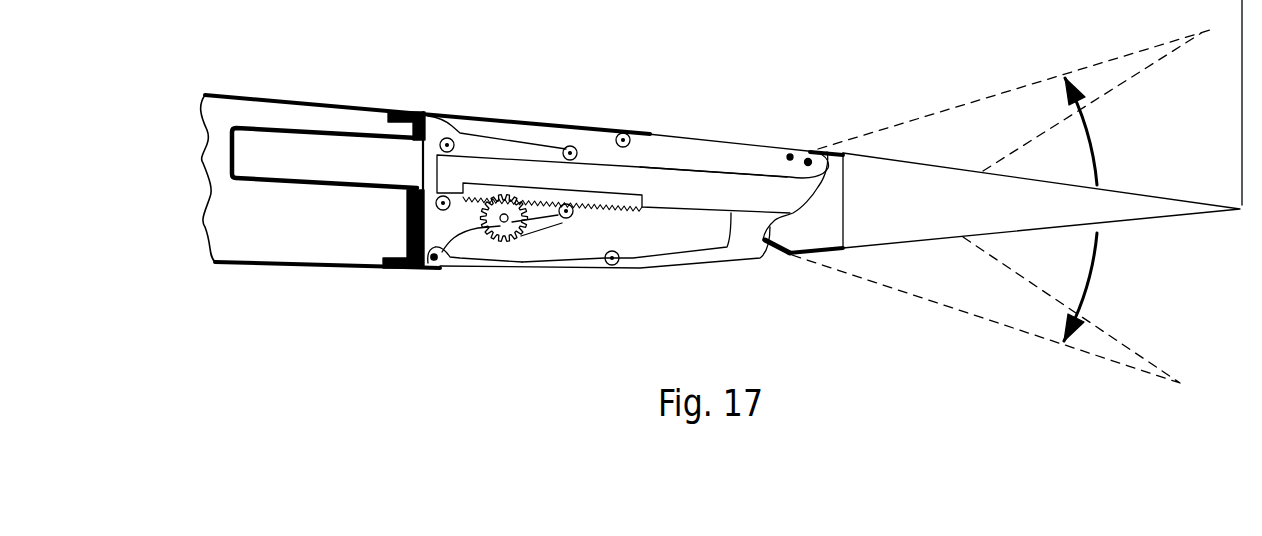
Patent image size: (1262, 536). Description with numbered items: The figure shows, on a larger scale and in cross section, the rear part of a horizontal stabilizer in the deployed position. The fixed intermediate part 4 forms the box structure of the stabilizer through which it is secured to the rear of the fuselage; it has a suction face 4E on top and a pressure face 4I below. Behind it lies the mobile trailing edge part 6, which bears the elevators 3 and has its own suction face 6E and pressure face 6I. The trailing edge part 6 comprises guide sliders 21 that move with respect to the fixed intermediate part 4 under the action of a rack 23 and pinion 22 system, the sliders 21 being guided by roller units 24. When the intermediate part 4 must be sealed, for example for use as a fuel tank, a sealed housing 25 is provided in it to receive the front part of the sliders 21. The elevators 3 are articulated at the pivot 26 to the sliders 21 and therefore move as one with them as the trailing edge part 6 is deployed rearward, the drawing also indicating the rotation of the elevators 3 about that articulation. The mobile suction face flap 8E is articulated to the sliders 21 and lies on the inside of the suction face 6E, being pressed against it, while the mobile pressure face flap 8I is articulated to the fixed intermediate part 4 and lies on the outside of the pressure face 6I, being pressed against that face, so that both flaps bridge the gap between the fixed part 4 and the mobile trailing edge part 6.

The elevator 3 is at (1057, 207).
The intermediate part 4 is at (258, 245).
The suction face 4E is at (270, 95).
The pressure face 4I is at (305, 270).
The trailing edge part 6 is at (807, 128).
The suction face 6E is at (585, 127).
The pressure face 6I is at (694, 258).
The mobile suction face flap 8E is at (728, 143).
The mobile pressure face flap 8I is at (487, 265).
The guide slider 21 is at (650, 180).
The pinion 22 is at (522, 236).
The rack 23 is at (590, 200).
The roller unit 24 is at (525, 150).
The sealed housing 25 is at (315, 182).
The articulation 26 is at (817, 153).